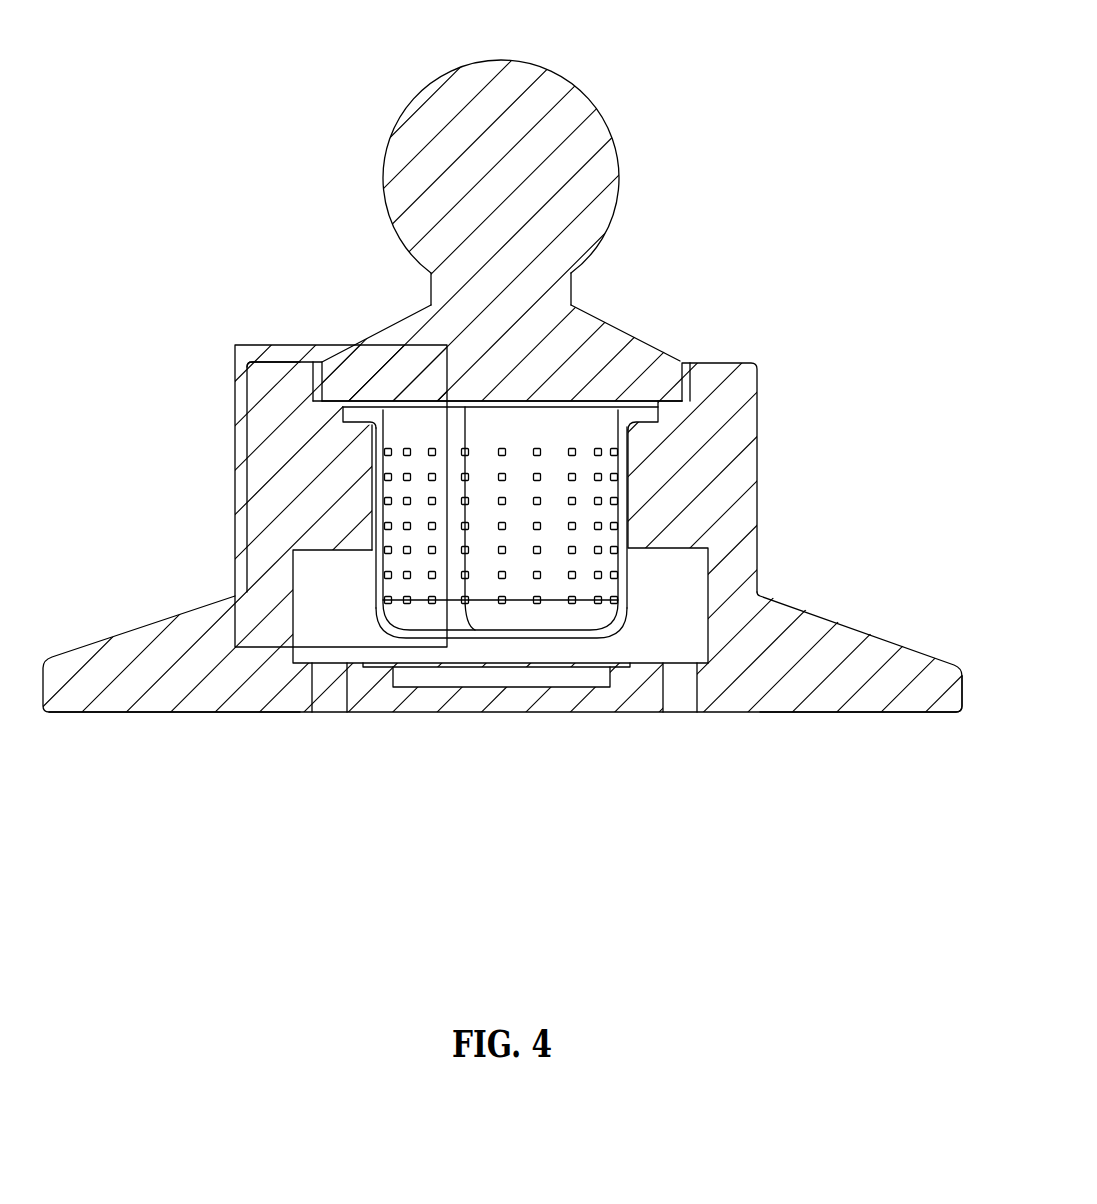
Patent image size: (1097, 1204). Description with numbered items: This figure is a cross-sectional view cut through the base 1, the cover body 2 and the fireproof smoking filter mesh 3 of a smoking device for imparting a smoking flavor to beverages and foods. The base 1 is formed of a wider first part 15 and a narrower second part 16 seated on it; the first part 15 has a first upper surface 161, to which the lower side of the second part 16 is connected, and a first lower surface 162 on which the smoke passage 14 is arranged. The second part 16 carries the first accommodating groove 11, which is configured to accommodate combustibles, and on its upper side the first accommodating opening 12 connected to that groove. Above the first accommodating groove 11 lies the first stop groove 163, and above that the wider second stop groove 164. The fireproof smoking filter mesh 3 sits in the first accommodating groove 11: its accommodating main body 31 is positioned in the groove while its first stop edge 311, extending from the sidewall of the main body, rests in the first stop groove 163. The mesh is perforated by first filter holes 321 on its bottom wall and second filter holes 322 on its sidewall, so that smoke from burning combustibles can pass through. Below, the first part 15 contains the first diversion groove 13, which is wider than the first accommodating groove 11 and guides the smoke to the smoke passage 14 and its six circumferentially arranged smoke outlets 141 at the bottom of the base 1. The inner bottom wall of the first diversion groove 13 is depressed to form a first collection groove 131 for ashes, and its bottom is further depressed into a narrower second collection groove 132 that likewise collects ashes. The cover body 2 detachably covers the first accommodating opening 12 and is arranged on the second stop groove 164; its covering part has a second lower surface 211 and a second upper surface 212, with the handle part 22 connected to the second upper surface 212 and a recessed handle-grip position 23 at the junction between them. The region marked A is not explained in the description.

The base 1 is at (548, 507).
The first accommodating groove 11 is at (367, 512).
The first accommodating opening 12 is at (610, 403).
The first diversion groove 13 is at (337, 633).
The first collection groove 131 is at (630, 670).
The second collection groove 132 is at (493, 673).
The smoke passage 14 is at (313, 710).
The smoke outlets 141 is at (677, 698).
The first part 15 is at (848, 678).
The second part 16 is at (572, 436).
The first upper surface 161 is at (840, 623).
The first lower surface 162 is at (203, 710).
The first stop groove 163 is at (253, 382).
The second stop groove 164 is at (317, 400).
The cover body 2 is at (548, 372).
The handle part 22 is at (517, 127).
The second lower surface 211 is at (500, 397).
The second upper surface 212 is at (405, 322).
The recessed handle-grip position 23 is at (565, 390).
The fireproof smoking filter mesh 3 is at (427, 581).
The accommodating main body 31 is at (393, 402).
The first stop edge 311 is at (353, 398).
The first filter holes 321 is at (573, 635).
The second filter holes 322 is at (540, 490).
The detail region A is at (223, 373).